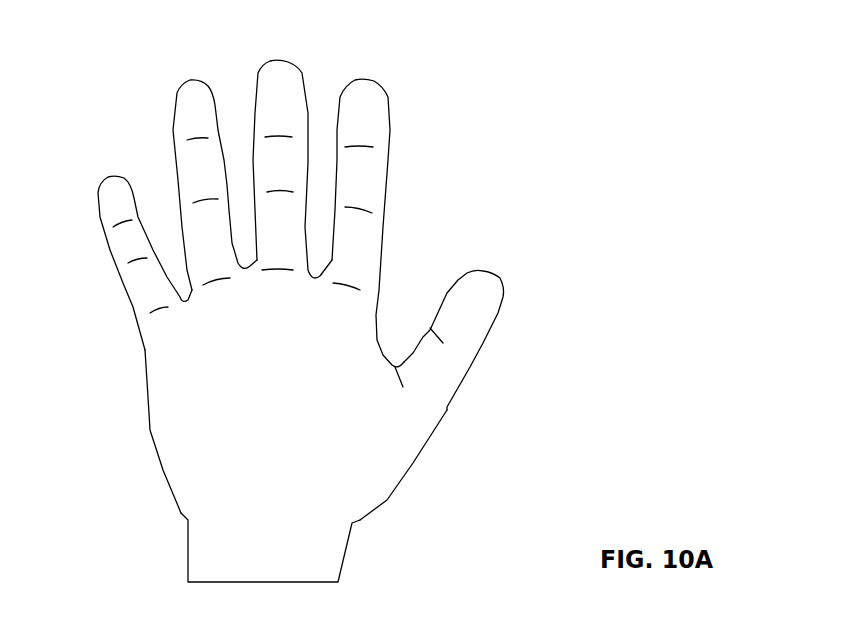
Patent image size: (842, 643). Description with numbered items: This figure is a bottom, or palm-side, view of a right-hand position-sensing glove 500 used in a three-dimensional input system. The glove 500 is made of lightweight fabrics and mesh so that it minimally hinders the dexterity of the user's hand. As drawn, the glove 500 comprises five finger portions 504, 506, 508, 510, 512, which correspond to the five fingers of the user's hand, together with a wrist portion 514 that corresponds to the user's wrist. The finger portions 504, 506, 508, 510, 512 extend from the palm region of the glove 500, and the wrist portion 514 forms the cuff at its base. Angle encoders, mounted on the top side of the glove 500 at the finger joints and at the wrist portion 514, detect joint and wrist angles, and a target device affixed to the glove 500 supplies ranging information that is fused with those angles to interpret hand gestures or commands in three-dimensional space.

The position-sensing glove 500 is at (708, 133).
The finger portion 504 is at (492, 288).
The finger portion 506 is at (375, 115).
The finger portion 508 is at (278, 68).
The finger portion 510 is at (193, 95).
The finger portion 512 is at (113, 192).
The wrist portion 514 is at (330, 572).